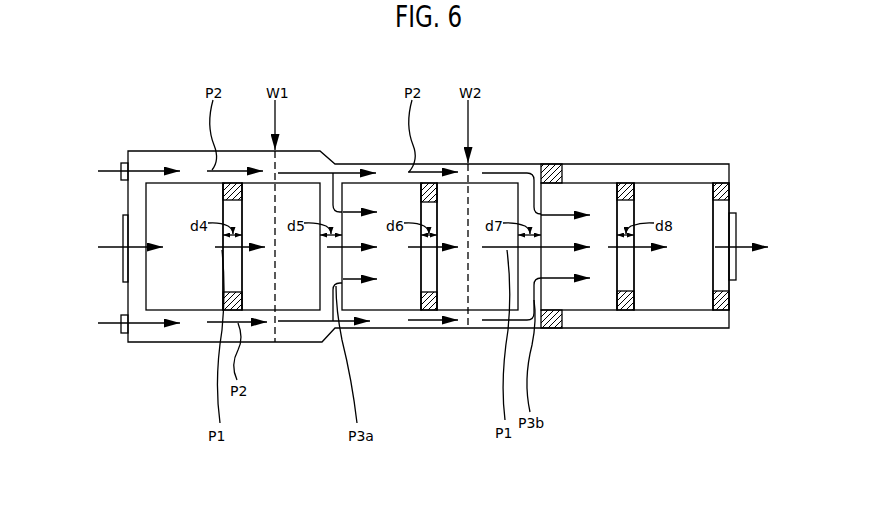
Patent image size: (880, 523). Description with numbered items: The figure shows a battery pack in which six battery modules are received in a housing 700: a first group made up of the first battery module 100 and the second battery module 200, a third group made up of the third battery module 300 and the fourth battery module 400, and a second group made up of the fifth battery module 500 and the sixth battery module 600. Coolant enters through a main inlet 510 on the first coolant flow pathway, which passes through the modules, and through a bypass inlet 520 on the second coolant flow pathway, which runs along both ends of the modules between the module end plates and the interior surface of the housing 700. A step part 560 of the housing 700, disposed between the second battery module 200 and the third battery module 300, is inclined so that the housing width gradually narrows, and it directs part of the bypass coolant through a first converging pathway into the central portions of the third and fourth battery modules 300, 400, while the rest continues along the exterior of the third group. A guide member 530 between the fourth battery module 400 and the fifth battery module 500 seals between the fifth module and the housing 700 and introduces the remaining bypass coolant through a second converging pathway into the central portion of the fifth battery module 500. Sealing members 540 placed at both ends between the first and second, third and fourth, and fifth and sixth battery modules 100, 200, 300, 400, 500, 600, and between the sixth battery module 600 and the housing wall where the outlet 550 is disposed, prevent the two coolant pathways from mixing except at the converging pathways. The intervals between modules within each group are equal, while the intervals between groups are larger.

The first battery module 100 is at (193, 295).
The second battery module 200 is at (295, 295).
The third battery module 300 is at (395, 295).
The fourth battery module 400 is at (487, 295).
The fifth battery module 500 is at (593, 300).
The sixth battery module 600 is at (682, 300).
The housing 700 is at (723, 328).
The main inlet 510 is at (122, 228).
The bypass inlet 520 is at (120, 171).
The guide member 530 is at (552, 163).
The sealing member 540 is at (230, 183).
The outlet 550 is at (737, 275).
The step part 560 is at (335, 332).